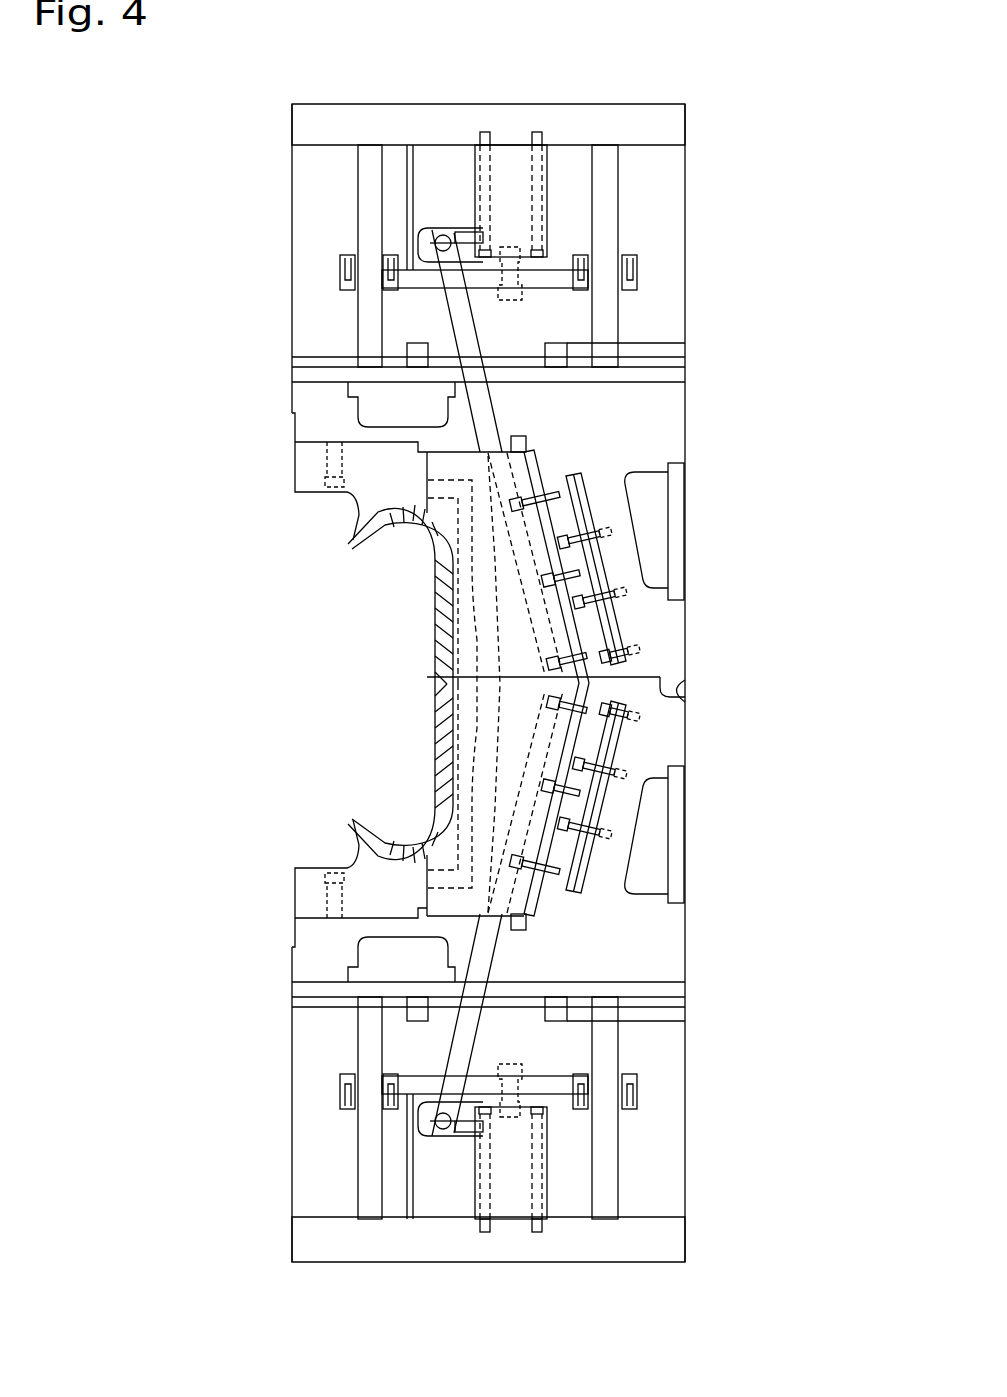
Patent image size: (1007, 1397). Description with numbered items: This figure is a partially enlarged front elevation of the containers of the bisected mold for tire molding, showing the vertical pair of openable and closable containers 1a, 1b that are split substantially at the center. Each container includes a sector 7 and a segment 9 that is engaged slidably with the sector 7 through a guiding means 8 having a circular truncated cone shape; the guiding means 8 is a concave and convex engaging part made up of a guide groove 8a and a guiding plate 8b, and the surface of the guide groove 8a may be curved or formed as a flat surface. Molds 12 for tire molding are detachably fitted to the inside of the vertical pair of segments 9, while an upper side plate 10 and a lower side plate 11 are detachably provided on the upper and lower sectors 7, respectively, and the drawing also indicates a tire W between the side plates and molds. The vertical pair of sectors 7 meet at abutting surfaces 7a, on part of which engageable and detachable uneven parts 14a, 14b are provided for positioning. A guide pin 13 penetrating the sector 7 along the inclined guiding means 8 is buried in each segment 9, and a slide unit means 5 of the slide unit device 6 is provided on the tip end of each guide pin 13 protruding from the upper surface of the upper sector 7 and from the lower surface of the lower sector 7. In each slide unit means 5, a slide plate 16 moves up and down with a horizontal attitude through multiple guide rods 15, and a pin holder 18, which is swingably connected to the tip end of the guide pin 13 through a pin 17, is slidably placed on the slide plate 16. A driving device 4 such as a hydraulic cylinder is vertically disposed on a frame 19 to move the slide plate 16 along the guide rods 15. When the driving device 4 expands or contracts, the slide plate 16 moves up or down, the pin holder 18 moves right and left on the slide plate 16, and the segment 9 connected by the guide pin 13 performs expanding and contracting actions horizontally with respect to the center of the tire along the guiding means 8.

The container 1a is at (700, 490).
The container 1b is at (700, 822).
The driving device 4 is at (553, 182).
The slide unit means 5 is at (425, 237).
The slide unit device 6 is at (454, 222).
The sector 7 is at (613, 518).
The abutting surface 7a is at (660, 674).
The guiding means 8 is at (587, 485).
The guide groove 8a is at (548, 452).
The guiding plate 8b is at (575, 568).
The segment 9 is at (440, 645).
The upper side plate 10 is at (302, 470).
The lower side plate 11 is at (302, 896).
The mold for tire molding 12 is at (447, 743).
The guide pin 13 is at (485, 403).
The uneven part for positioning 14a is at (673, 682).
The uneven part for positioning 14b is at (673, 698).
The guide rod 15 is at (612, 228).
The slide plate 16 is at (538, 283).
The pin 17 is at (443, 235).
The pin holder 18 is at (440, 240).
The frame 19 is at (302, 130).
The workpiece W is at (426, 578).